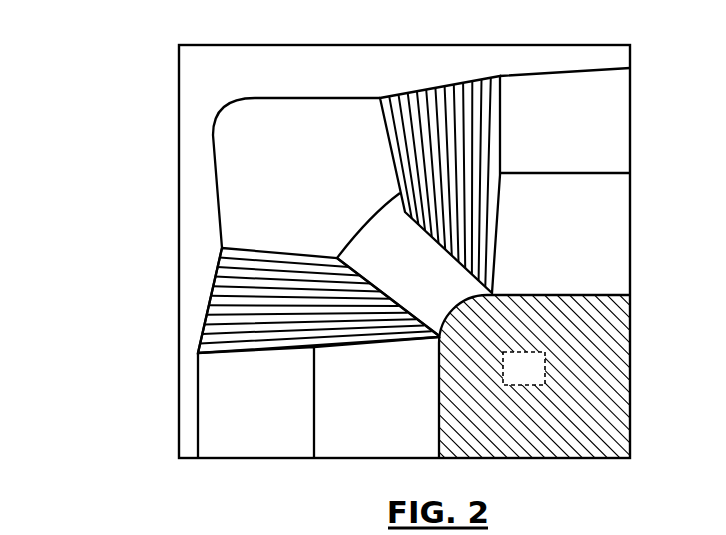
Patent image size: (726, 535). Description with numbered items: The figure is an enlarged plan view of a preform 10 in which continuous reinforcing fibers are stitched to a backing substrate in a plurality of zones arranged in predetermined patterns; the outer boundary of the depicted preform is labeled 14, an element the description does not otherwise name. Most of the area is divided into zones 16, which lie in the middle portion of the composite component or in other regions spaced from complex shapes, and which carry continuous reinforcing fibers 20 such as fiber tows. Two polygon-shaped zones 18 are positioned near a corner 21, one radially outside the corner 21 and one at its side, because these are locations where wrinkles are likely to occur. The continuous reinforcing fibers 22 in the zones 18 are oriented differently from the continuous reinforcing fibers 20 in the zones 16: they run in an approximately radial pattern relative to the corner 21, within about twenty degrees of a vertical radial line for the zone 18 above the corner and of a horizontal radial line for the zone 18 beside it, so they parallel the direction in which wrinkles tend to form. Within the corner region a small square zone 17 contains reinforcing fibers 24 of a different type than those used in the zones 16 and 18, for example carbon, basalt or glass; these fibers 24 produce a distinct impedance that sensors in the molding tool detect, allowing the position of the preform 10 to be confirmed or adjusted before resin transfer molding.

The preform 10 is at (121, 38).
The outer boundary 14 is at (332, 45).
The zones 16 is at (291, 194).
The zones 17 is at (524, 368).
The zones 18 is at (210, 293).
The continuous reinforcing fibers 20 is at (618, 333).
The corner 21 is at (445, 300).
The continuous reinforcing fibers 22 is at (285, 260).
The reinforcing fibers 24 is at (596, 381).